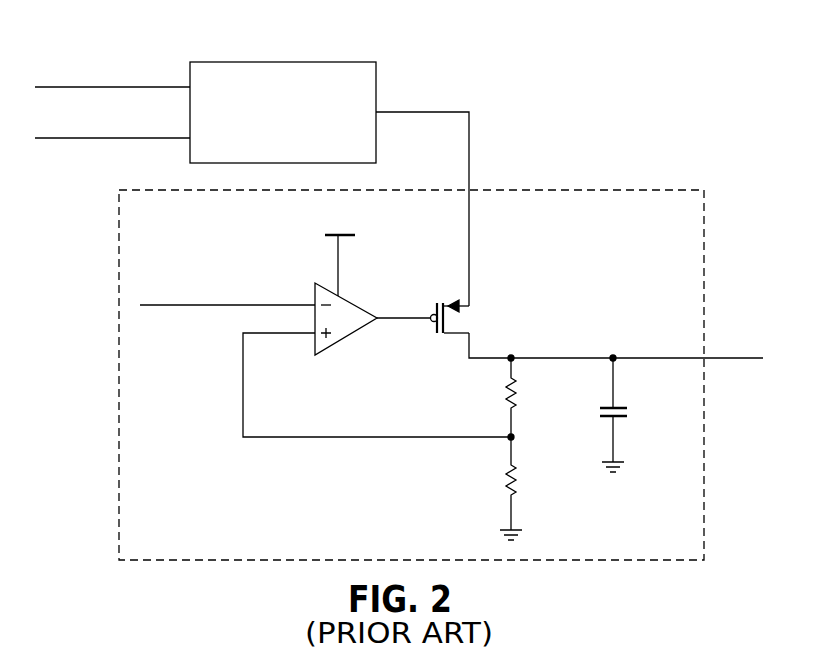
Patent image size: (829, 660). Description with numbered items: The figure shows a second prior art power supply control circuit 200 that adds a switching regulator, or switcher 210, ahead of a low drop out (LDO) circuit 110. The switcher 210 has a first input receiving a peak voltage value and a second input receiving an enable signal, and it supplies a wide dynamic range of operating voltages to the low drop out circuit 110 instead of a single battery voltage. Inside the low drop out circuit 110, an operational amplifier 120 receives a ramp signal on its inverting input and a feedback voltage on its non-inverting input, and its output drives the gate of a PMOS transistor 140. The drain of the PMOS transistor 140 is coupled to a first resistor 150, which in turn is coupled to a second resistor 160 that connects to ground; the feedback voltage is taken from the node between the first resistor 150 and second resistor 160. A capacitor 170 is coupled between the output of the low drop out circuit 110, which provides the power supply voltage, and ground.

The power supply control circuit 200 is at (618, 70).
The switching regulator 210 is at (336, 61).
The low drop out (LDO) circuit 110 is at (593, 190).
The operational amplifier 120 is at (353, 300).
The PMOS transistor 140 is at (435, 327).
The first resistor 150 is at (505, 392).
The second resistor 160 is at (503, 478).
The capacitor 170 is at (620, 405).